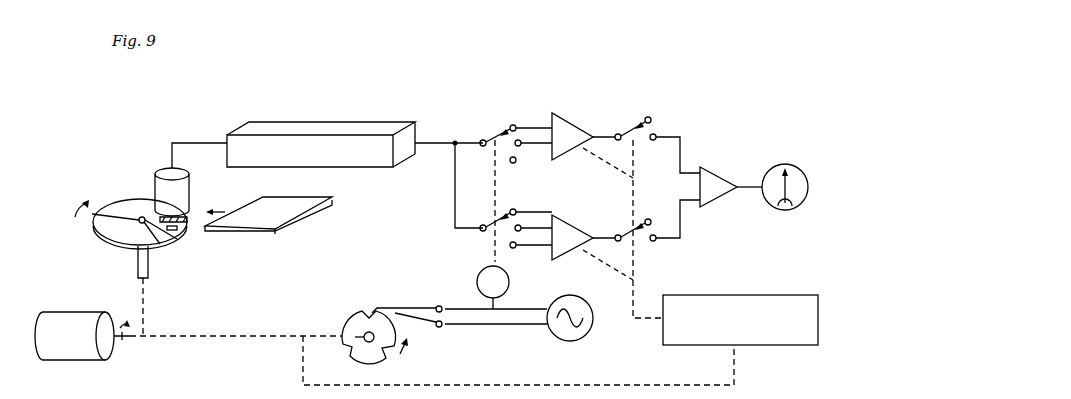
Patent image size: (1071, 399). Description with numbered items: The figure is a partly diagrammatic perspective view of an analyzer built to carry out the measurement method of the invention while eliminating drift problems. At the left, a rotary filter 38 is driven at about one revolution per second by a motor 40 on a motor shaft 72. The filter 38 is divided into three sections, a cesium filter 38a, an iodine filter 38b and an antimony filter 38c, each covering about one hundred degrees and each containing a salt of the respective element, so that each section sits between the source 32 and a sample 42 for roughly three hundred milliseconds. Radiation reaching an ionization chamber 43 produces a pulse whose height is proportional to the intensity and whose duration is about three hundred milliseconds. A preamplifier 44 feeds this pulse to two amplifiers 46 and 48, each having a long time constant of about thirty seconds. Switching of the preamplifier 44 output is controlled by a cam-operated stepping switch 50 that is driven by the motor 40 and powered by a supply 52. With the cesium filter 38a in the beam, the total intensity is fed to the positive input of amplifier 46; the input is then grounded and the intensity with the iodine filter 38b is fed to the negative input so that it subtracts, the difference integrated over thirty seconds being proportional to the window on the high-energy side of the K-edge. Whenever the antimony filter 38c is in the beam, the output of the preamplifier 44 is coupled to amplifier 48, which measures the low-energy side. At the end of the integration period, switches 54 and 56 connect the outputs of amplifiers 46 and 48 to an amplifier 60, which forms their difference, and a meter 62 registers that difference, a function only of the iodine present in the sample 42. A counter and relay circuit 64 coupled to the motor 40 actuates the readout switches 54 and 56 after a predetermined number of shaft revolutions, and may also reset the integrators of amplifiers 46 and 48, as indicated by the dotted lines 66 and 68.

The rotary filter 38 is at (123, 213).
The cesium filter section 38a is at (175, 245).
The iodine filter section 38b is at (133, 203).
The antimony filter section 38c is at (108, 232).
The ionization chamber 43 is at (190, 187).
The sample 42 is at (283, 208).
The source 32 is at (180, 229).
The motor shaft 72 is at (138, 268).
The motor 40 is at (75, 312).
The preamplifier 44 is at (321, 122).
The amplifier 46 is at (565, 113).
The amplifier 48 is at (565, 215).
The readout switch 54 is at (650, 118).
The readout switch 56 is at (648, 220).
The dotted line 66 is at (612, 167).
The dotted line 68 is at (607, 270).
The amplifier 60 is at (705, 166).
The meter 62 is at (798, 165).
The counter and relay circuit 64 is at (742, 295).
The cam-operated stepping switch 50 is at (477, 277).
The supply 52 is at (592, 331).